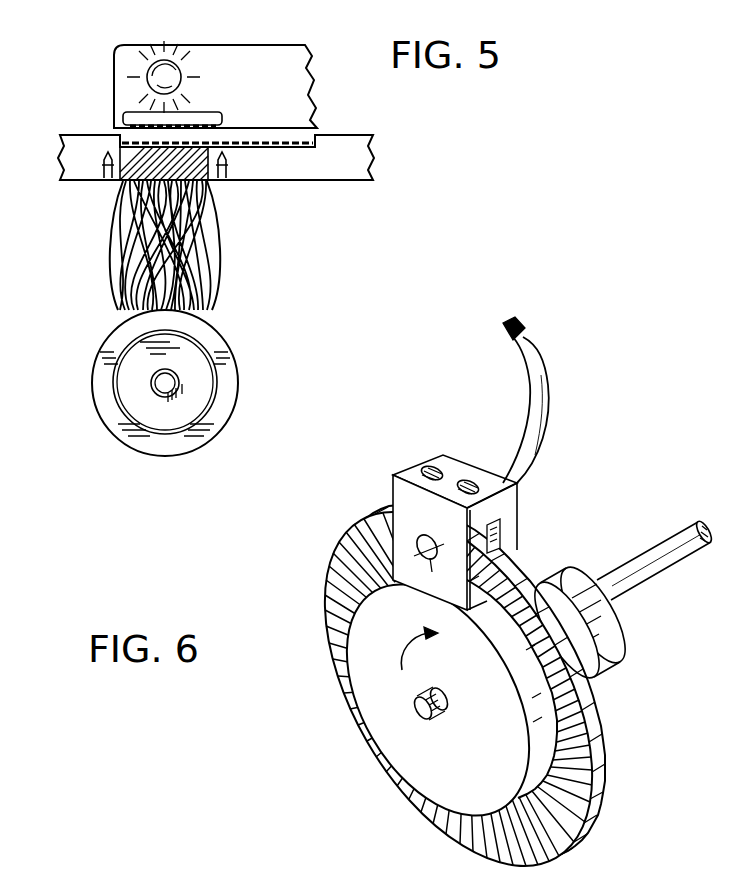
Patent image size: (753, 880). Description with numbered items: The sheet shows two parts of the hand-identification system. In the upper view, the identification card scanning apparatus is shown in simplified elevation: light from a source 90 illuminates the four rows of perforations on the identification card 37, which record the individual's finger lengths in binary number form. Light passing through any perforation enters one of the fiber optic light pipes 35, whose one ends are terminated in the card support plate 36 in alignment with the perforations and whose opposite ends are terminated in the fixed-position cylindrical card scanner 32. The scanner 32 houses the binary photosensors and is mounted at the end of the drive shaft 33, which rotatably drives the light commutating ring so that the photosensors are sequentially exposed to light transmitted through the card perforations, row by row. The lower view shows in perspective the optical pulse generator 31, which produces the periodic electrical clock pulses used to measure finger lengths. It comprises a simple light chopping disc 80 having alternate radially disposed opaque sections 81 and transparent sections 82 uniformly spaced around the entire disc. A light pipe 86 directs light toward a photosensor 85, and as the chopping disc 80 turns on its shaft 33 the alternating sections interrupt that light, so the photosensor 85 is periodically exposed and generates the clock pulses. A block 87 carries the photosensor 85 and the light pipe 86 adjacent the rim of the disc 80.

In FIG. 5, the light source 90 is at (150, 80).
In FIG. 5, the identification card 37 is at (236, 145).
In FIG. 5, the card support plate 36 is at (130, 185).
In FIG. 5, the fiber optic light pipes 35 is at (145, 260).
In FIG. 5, the card scanner 32 is at (106, 370).
In FIG. 5, the drive shaft 33 is at (157, 389).
In FIG. 6, the drive shaft 33 is at (672, 552).
In FIG. 6, the light chopping disc 80 is at (342, 667).
In FIG. 6, the opaque sections 81 is at (352, 565).
In FIG. 6, the transparent sections 82 is at (372, 548).
In FIG. 6, the sensor block 87 is at (412, 497).
In FIG. 6, the photosensor 85 is at (437, 540).
In FIG. 6, the light pipe 86 is at (546, 410).
In FIG. 6, the pulse generator 31 is at (669, 694).